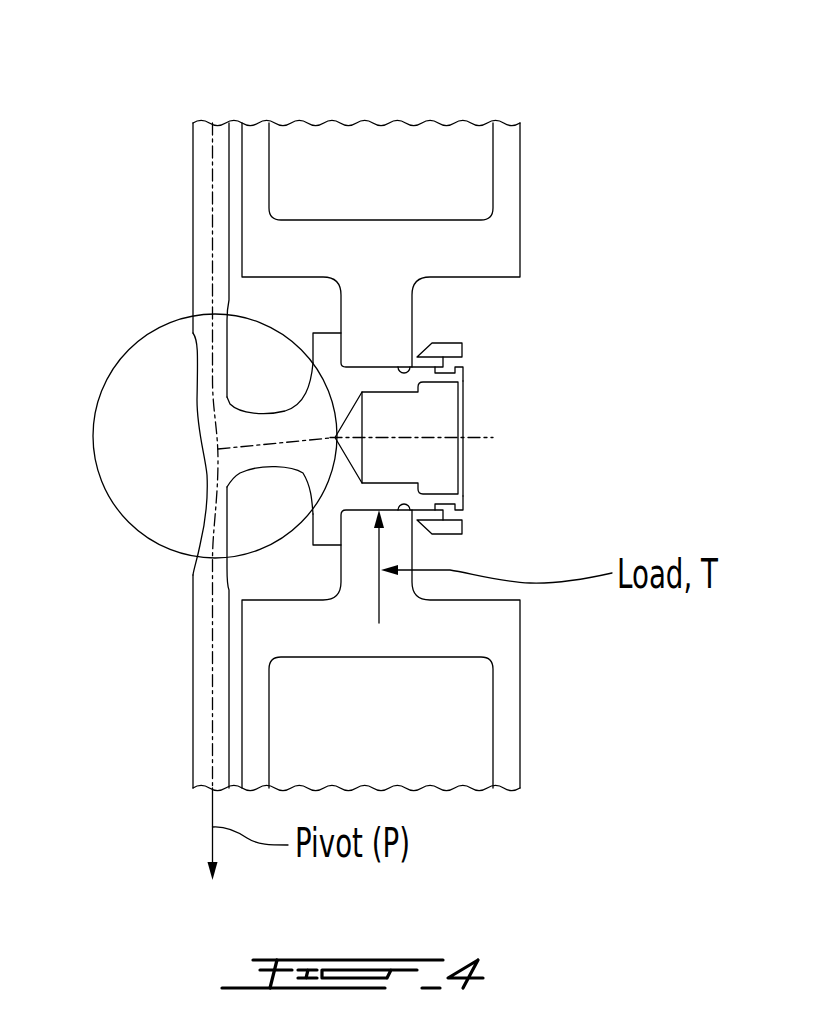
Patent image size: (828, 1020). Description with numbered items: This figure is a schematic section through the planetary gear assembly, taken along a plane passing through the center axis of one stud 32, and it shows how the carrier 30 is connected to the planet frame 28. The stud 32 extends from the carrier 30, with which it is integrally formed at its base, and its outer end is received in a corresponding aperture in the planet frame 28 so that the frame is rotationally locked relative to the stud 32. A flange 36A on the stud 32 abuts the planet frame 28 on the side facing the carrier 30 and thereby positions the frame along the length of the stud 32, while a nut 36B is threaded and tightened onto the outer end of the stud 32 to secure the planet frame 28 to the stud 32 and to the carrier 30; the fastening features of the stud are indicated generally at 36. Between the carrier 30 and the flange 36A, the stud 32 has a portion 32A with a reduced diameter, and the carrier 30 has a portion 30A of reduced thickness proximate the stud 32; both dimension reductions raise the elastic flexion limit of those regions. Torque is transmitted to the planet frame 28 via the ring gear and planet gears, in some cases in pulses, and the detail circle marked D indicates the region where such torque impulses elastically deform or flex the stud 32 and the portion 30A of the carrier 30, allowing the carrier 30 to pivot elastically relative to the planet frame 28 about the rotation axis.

The planet frame 28 is at (446, 262).
The carrier 30 is at (202, 150).
The portion of the carrier 30A is at (205, 516).
The stud 32 is at (390, 392).
The portion of the stud 32A is at (258, 432).
The lower nut 36 is at (484, 520).
The flange 36A is at (328, 545).
The nut 36B is at (463, 373).
The elastic deformation region D is at (123, 350).